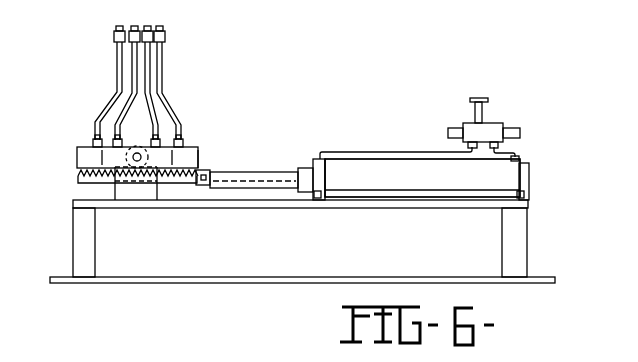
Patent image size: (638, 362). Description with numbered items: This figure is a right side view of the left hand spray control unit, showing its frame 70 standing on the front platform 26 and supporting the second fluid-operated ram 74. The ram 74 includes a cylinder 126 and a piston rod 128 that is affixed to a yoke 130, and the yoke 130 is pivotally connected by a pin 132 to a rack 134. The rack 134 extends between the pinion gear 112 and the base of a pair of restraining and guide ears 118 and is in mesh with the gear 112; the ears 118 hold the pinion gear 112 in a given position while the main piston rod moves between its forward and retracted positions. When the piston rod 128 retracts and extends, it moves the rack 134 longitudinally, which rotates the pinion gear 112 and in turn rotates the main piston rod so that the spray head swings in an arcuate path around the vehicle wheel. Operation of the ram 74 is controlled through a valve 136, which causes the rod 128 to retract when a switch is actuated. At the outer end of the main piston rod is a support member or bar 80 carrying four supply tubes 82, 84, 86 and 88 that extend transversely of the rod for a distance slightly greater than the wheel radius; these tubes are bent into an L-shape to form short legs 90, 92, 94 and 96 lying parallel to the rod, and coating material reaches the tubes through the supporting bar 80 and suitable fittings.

The front platform 26 is at (405, 279).
The frame 70 is at (362, 208).
The second fluid-operated ram 74 is at (392, 160).
The support member 80 is at (195, 150).
The supply tube 82 is at (104, 112).
The supply tube 84 is at (131, 85).
The supply tube 86 is at (151, 105).
The supply tube 88 is at (174, 118).
The short leg 90 is at (114, 34).
The short leg 92 is at (131, 27).
The short leg 94 is at (159, 26).
The short leg 96 is at (165, 33).
The pinion gear 112 is at (113, 141).
The restraining and guide ears 118 is at (114, 183).
The cylinder 126 is at (462, 190).
The piston rod 128 is at (278, 172).
The yoke 130 is at (209, 169).
The pin 132 is at (205, 185).
The rack 134 is at (78, 171).
The valve 136 is at (500, 124).